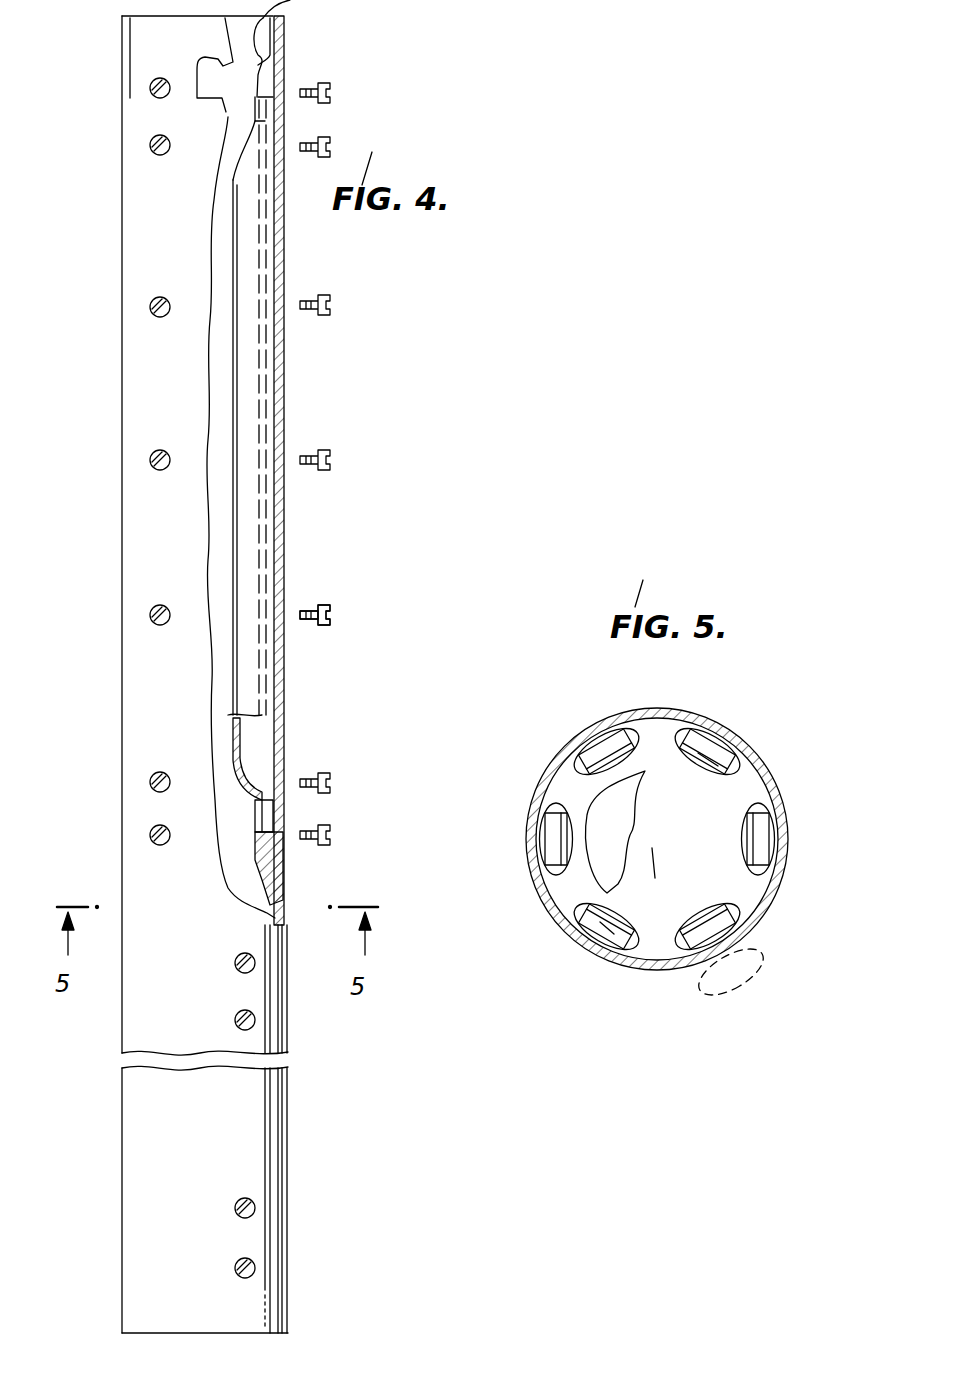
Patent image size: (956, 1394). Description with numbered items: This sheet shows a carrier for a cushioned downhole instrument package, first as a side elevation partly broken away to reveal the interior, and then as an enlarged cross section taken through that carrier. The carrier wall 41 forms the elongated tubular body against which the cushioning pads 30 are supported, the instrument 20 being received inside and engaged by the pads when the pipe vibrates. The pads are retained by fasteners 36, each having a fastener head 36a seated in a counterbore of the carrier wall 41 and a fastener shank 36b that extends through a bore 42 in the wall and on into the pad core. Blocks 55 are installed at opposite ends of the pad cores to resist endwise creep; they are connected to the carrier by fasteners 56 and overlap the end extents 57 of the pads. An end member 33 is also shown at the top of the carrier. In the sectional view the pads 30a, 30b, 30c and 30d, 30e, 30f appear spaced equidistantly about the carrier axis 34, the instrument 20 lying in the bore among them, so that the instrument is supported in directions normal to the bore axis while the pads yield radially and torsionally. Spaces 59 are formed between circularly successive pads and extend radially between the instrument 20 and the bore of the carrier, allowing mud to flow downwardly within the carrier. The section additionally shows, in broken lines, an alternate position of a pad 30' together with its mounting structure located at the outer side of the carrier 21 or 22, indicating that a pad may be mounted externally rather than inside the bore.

In FIG. 5, the instrument 20 is at (594, 797).
In FIG. 4, the carrier 21 is at (302, 385).
In FIG. 5, the carrier 21 is at (664, 705).
In FIG. 5, the carrier 22 is at (657, 839).
In FIG. 4, the pad 30 is at (151, 490).
In FIG. 5, the pad in alternate position 30' is at (702, 1003).
In FIG. 5, the pad 30a is at (578, 758).
In FIG. 5, the pad 30b is at (767, 873).
In FIG. 5, the pad 30c is at (630, 948).
In FIG. 5, the pad 30d is at (555, 874).
In FIG. 5, the pad 30e is at (683, 737).
In FIG. 5, the pad 30f is at (771, 906).
In FIG. 4, the end cap 33 is at (263, 18).
In FIG. 5, the carrier axis 34 is at (673, 870).
In FIG. 4, the fastener 36 is at (317, 636).
In FIG. 4, the fastener head 36a is at (330, 614).
In FIG. 4, the fastener shank 36b is at (313, 612).
In FIG. 4, the carrier wall 41 is at (285, 504).
In FIG. 5, the carrier wall 41 is at (766, 763).
In FIG. 4, the bore 42 is at (277, 618).
In FIG. 4, the block 55 is at (262, 862).
In FIG. 5, the block 55 is at (710, 752).
In FIG. 4, the fastener 56 is at (322, 82).
In FIG. 4, the end extent 57 is at (258, 111).
In FIG. 5, the space 59 is at (738, 786).